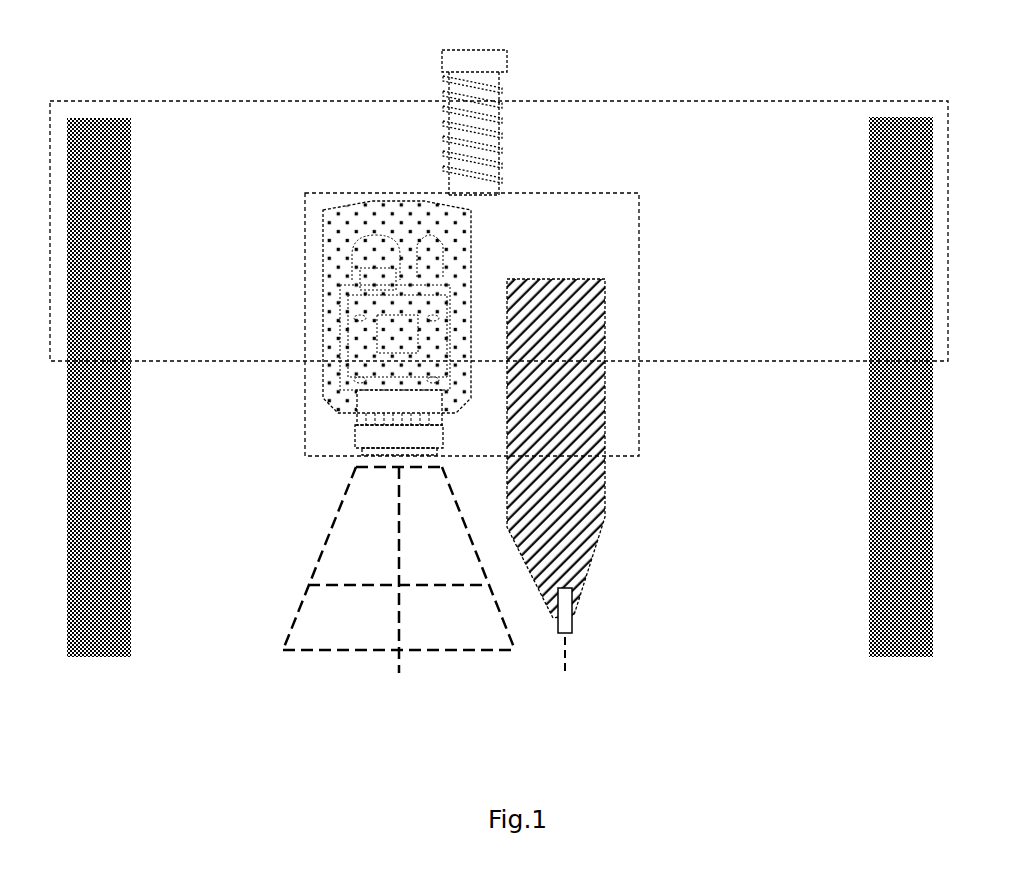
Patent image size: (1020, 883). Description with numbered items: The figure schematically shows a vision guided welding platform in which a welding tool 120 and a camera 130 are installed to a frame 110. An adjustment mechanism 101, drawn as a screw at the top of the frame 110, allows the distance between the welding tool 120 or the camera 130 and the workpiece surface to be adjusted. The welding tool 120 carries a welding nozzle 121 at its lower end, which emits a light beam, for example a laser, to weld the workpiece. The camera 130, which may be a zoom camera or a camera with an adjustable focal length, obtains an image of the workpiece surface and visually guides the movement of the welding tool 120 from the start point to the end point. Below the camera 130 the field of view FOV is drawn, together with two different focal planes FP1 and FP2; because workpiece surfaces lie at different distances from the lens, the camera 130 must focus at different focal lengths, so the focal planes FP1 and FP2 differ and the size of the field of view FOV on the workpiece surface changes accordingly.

The adjustment mechanism 101 is at (503, 80).
The frame 110 is at (790, 132).
The welding tool 120 is at (612, 518).
The welding nozzle 121 is at (573, 628).
The camera 130 is at (332, 433).
The field of view FOV is at (328, 540).
The first focal plane FP1 is at (333, 588).
The second focal plane FP2 is at (430, 652).